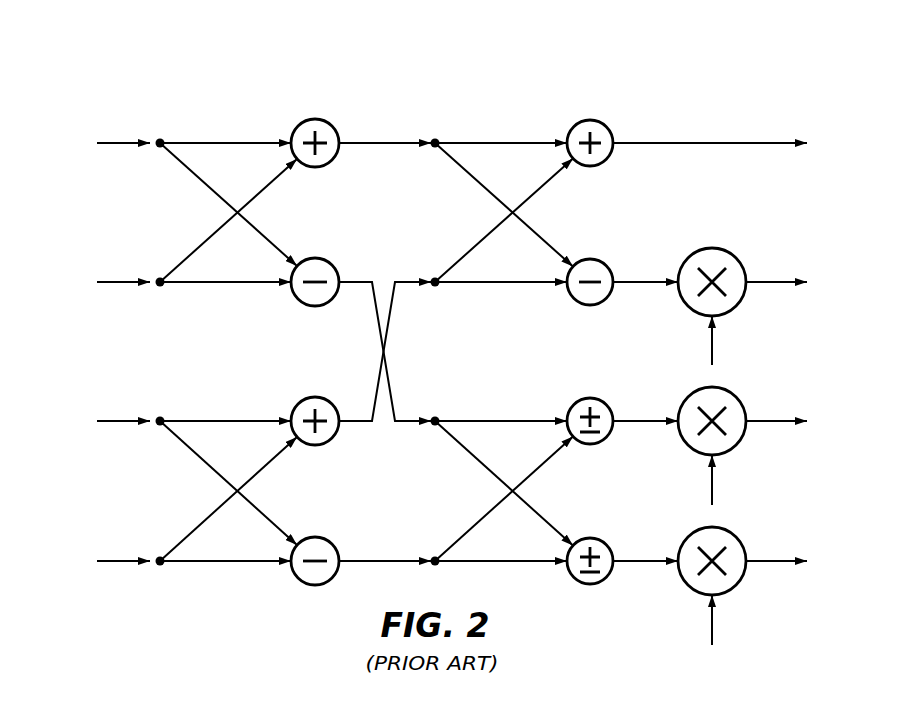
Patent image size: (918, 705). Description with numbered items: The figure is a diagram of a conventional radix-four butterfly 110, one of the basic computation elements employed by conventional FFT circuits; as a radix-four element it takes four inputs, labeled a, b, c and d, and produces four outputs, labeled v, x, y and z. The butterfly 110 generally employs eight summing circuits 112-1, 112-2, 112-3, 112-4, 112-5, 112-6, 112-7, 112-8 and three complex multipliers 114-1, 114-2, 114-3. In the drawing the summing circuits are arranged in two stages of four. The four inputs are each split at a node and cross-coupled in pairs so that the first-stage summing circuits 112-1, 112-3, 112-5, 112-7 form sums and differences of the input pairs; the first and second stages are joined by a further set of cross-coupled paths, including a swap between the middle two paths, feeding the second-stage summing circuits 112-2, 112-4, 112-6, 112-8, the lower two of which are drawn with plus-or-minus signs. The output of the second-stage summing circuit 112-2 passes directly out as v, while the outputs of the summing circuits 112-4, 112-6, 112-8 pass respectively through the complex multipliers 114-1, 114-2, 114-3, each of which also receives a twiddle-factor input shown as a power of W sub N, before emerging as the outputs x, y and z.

The butterfly 110 is at (660, 75).
The summing circuit 112-1 is at (303, 120).
The summing circuit 112-2 is at (580, 118).
The summing circuit 112-3 is at (315, 258).
The summing circuit 112-4 is at (592, 259).
The summing circuit 112-5 is at (303, 398).
The summing circuit 112-6 is at (579, 398).
The summing circuit 112-7 is at (315, 537).
The summing circuit 112-8 is at (586, 538).
The complex multiplier 114-1 is at (710, 248).
The complex multiplier 114-2 is at (696, 392).
The complex multiplier 114-3 is at (694, 532).